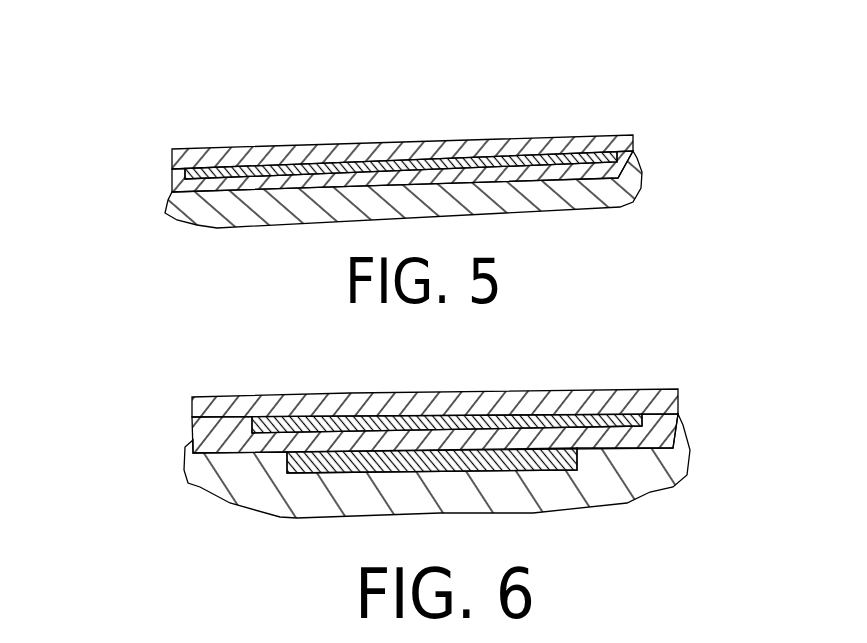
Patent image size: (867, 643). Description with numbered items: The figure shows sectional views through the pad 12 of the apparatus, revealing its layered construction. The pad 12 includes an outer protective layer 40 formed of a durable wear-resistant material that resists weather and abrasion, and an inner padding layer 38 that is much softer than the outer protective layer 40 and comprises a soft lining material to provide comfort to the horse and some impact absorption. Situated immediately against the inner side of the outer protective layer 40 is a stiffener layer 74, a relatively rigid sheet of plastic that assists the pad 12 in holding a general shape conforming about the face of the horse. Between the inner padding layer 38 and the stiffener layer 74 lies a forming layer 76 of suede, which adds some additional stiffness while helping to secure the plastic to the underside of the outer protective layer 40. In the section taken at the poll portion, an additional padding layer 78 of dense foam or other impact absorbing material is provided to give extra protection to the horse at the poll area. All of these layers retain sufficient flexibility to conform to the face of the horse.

In FIG. 5, the pad 12 is at (380, 162).
In FIG. 6, the pad 12 is at (443, 437).
In FIG. 5, the inner padding layer 38 is at (200, 228).
In FIG. 6, the inner padding layer 38 is at (627, 503).
In FIG. 5, the outer protective layer 40 is at (207, 149).
In FIG. 6, the outer protective layer 40 is at (222, 398).
In FIG. 5, the stiffener layer 74 is at (398, 162).
In FIG. 6, the stiffener layer 74 is at (417, 413).
In FIG. 5, the forming layer 76 is at (550, 173).
In FIG. 6, the forming layer 76 is at (250, 442).
In FIG. 6, the additional padding layer 78 is at (548, 470).